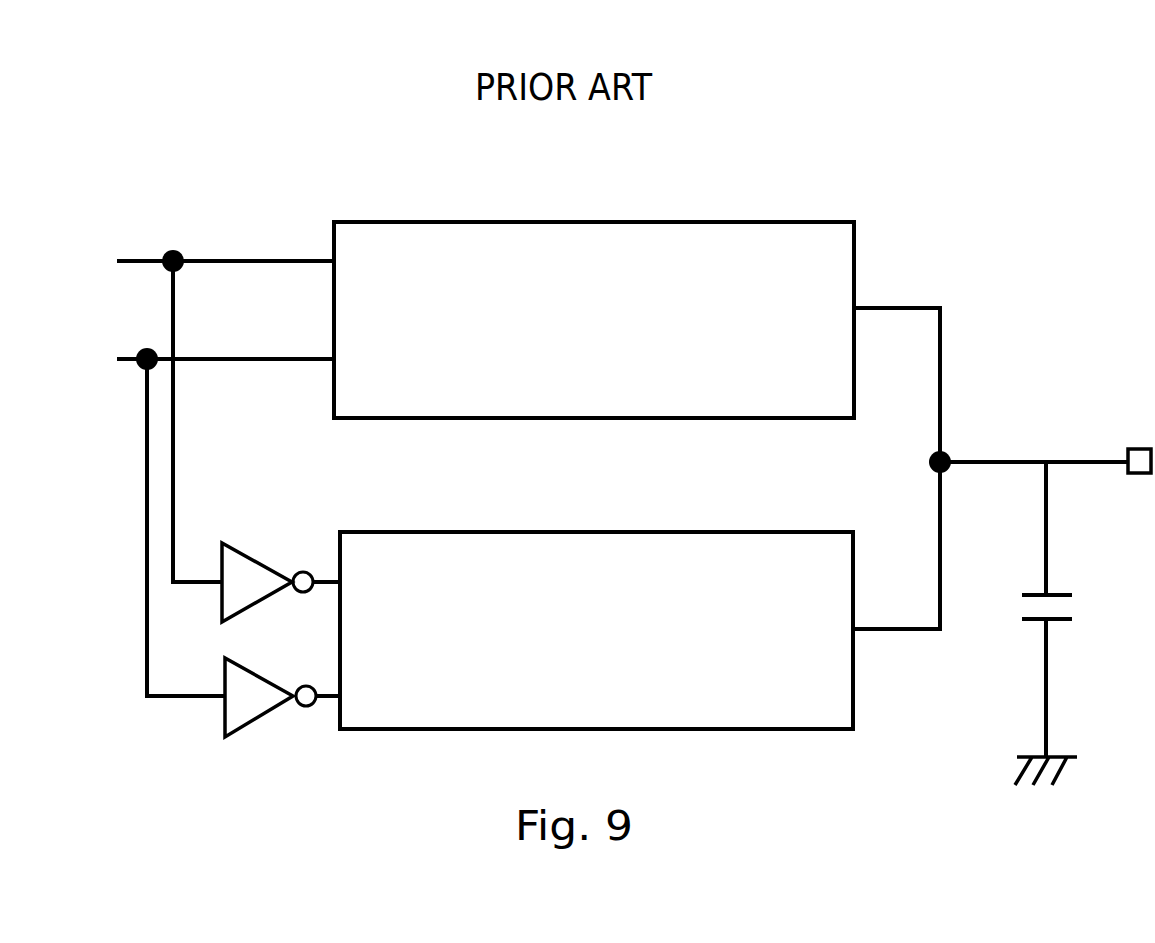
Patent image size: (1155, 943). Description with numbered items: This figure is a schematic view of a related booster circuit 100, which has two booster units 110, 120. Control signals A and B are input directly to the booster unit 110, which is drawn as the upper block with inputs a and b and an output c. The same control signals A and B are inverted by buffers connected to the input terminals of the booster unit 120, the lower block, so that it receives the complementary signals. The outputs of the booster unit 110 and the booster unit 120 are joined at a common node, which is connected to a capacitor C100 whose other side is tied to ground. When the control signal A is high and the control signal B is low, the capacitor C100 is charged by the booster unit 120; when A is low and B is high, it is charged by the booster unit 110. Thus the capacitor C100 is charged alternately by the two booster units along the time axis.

The booster circuit 100 is at (948, 154).
The booster unit 110 is at (770, 222).
The booster unit 120 is at (722, 532).
The capacitor C100 is at (1082, 609).